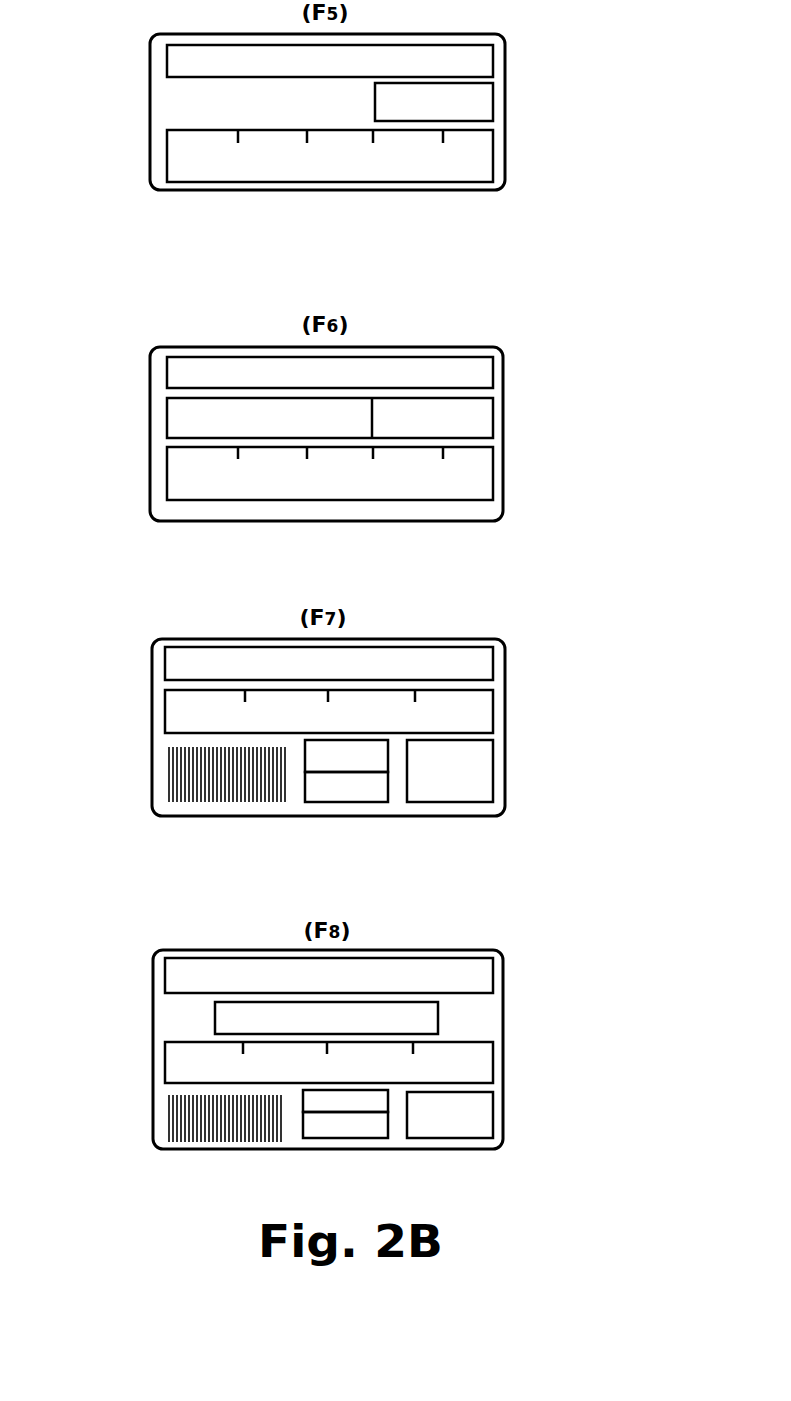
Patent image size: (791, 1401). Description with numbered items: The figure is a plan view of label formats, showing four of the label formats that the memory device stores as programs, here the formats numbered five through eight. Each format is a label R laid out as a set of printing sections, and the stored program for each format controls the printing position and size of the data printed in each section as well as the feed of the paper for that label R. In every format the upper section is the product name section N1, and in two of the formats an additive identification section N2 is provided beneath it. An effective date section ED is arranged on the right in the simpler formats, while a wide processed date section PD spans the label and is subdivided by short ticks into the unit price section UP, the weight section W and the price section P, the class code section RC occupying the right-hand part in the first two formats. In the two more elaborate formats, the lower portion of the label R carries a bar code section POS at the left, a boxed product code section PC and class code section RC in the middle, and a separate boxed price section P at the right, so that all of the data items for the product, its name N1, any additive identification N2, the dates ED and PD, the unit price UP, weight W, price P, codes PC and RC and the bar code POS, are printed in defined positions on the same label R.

The label R is at (504, 102).
The product name section N1 is at (329, 519).
The additive identification section N2 is at (330, 716).
The effective date section ED is at (270, 1062).
The processed date section PD is at (193, 158).
The unit price section UP is at (260, 158).
The weight section W is at (338, 160).
The price section P is at (412, 160).
The class code section RC is at (470, 158).
The product code section PC is at (293, 1157).
The bar code section POS is at (170, 770).